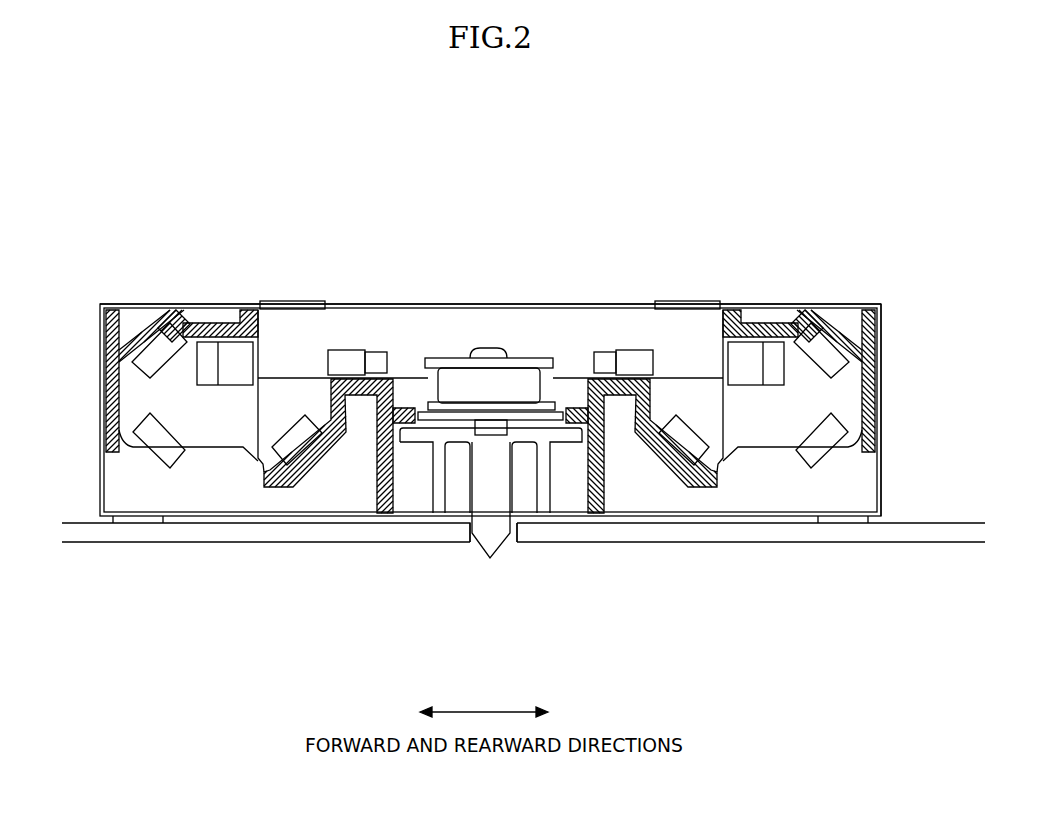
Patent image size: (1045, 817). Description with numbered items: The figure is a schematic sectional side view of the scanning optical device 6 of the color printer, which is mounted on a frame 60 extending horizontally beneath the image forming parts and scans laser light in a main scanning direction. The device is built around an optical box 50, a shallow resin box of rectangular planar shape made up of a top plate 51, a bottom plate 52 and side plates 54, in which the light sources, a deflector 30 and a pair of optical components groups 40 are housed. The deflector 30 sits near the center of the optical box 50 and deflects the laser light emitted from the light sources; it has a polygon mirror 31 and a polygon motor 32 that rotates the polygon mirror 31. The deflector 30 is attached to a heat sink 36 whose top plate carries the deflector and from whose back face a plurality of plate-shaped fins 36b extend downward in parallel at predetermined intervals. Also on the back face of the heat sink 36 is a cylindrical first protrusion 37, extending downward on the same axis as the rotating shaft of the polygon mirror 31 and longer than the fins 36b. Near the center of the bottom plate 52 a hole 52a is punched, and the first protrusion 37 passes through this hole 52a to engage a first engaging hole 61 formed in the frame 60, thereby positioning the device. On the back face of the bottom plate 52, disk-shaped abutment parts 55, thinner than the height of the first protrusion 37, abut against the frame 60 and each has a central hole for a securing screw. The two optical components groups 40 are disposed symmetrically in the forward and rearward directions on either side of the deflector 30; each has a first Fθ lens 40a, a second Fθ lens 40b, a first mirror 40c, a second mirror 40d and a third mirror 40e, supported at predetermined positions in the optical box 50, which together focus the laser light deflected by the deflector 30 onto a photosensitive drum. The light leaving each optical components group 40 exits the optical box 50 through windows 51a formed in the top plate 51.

The scanning optical device 6 is at (233, 200).
The deflector 30 is at (439, 330).
The polygon mirror 31 is at (522, 357).
The polygon motor 32 is at (542, 390).
The heat sink 36 is at (427, 500).
The fins 36b is at (550, 499).
The first protrusion 37 is at (484, 543).
The optical components groups 40 is at (198, 436).
The first Fθ lens 40a is at (335, 360).
The second Fθ lens 40b is at (207, 386).
The first mirror 40c is at (162, 353).
The second mirror 40d is at (158, 447).
The third mirror 40e is at (294, 430).
The optical box 50 is at (98, 430).
The top plate 51 is at (361, 303).
The windows 51a is at (297, 303).
The bottom plate 52 is at (268, 518).
The hole 52a is at (516, 504).
The side plates 54 is at (881, 398).
The abutment parts 55 is at (140, 523).
The frame 60 is at (244, 548).
The first engaging hole 61 is at (510, 543).